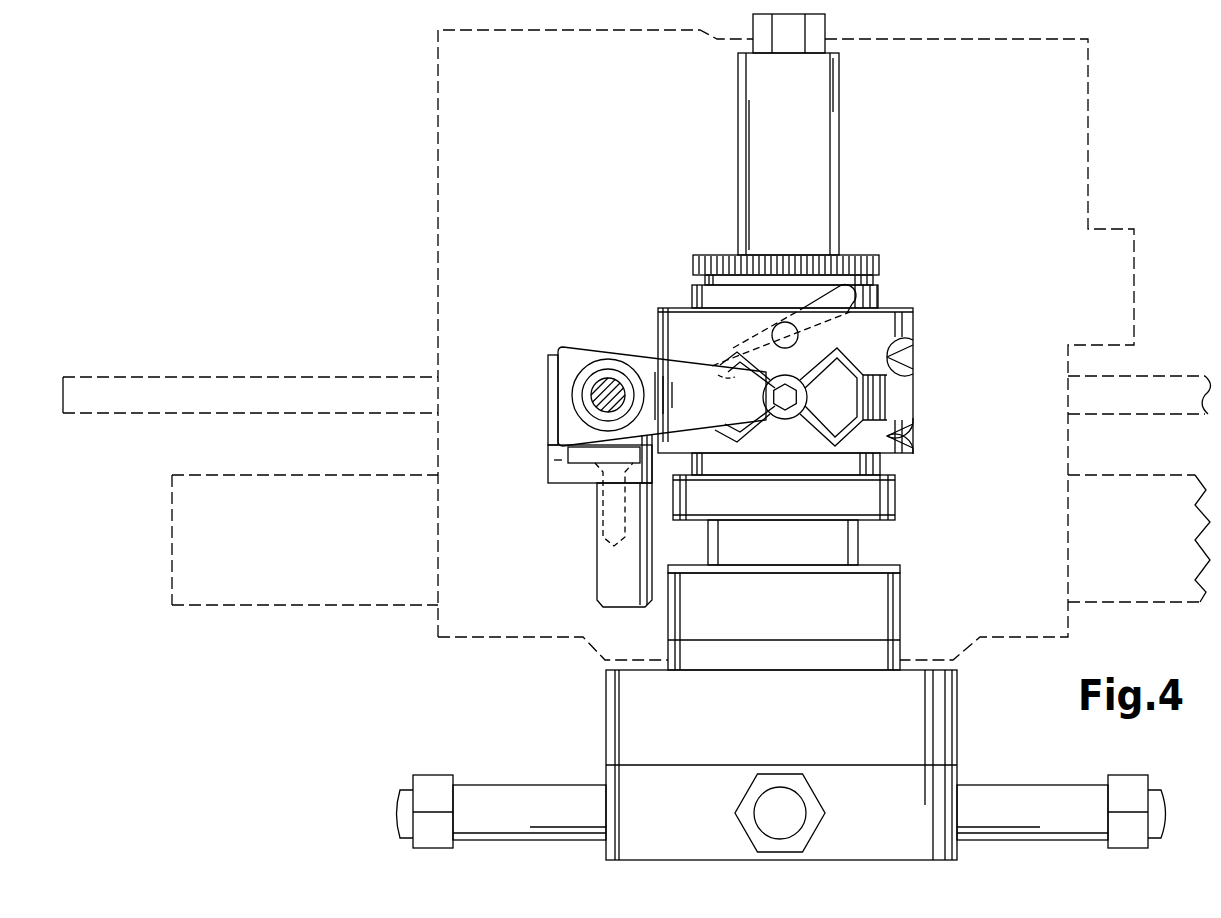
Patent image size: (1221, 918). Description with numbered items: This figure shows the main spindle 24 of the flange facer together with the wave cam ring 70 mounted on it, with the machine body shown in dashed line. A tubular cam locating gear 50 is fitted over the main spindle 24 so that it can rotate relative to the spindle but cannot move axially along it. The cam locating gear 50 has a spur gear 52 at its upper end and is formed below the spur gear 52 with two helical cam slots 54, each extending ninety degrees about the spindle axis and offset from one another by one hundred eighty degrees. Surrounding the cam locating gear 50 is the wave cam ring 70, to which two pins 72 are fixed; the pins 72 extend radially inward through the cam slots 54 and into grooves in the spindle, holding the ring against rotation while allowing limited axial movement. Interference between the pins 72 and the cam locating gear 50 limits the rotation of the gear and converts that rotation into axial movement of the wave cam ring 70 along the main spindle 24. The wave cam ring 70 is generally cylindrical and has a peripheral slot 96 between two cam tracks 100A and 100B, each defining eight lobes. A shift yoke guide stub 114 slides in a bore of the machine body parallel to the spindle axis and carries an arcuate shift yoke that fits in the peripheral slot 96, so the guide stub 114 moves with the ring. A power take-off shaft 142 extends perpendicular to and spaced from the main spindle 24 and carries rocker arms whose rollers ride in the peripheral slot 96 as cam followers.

The main spindle 24 is at (820, 150).
The cam locating gear 50 is at (690, 298).
The spur gear 52 is at (880, 264).
The helical cam slots 54 is at (878, 297).
The wave cam ring 70 is at (678, 326).
The pins 72 is at (787, 332).
The peripheral slot 96 is at (896, 392).
The cam track 100A is at (897, 348).
The cam track 100B is at (898, 452).
The shift yoke guide stub 114 is at (605, 556).
The power take-off shaft 142 is at (600, 390).